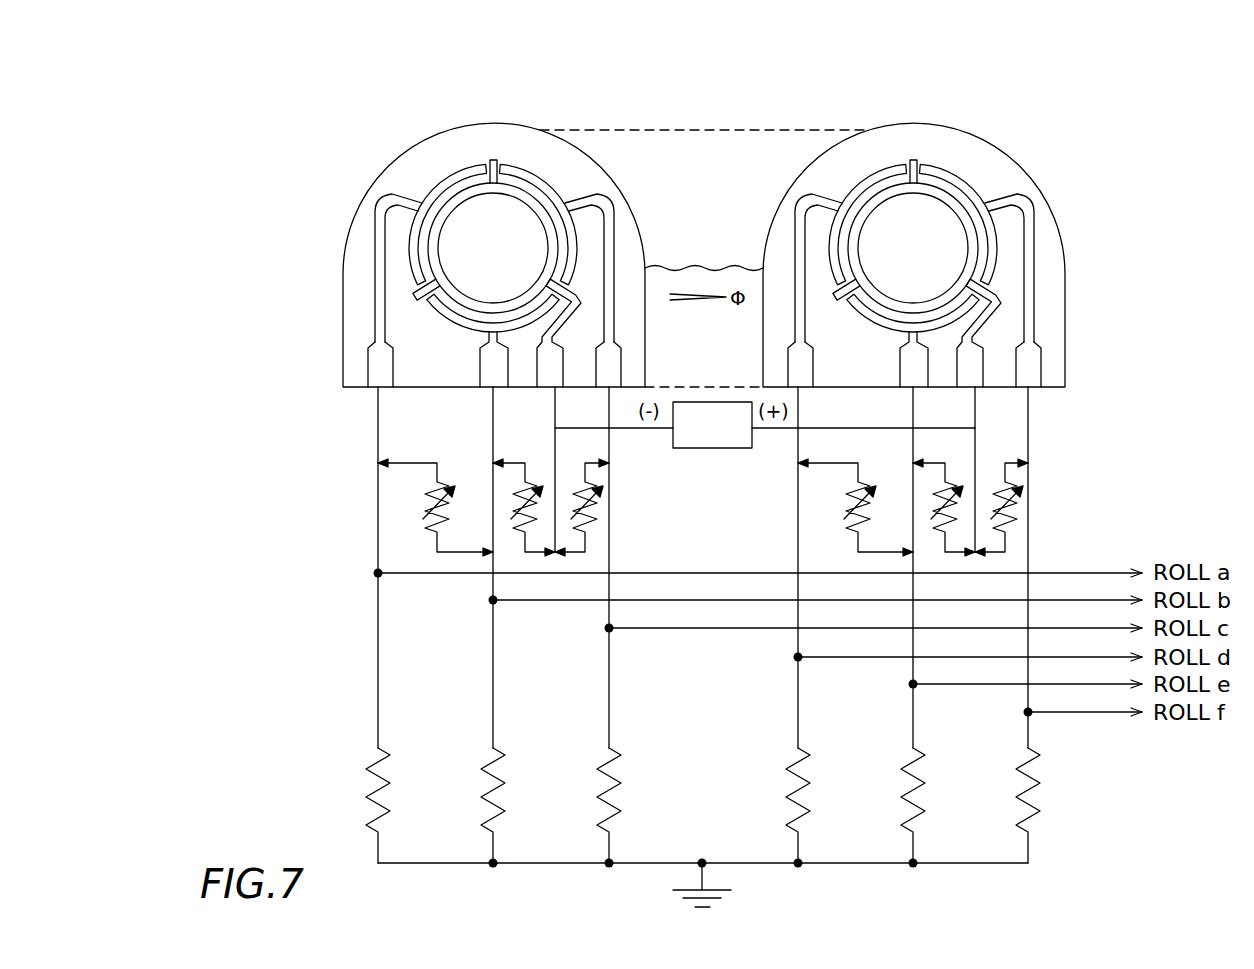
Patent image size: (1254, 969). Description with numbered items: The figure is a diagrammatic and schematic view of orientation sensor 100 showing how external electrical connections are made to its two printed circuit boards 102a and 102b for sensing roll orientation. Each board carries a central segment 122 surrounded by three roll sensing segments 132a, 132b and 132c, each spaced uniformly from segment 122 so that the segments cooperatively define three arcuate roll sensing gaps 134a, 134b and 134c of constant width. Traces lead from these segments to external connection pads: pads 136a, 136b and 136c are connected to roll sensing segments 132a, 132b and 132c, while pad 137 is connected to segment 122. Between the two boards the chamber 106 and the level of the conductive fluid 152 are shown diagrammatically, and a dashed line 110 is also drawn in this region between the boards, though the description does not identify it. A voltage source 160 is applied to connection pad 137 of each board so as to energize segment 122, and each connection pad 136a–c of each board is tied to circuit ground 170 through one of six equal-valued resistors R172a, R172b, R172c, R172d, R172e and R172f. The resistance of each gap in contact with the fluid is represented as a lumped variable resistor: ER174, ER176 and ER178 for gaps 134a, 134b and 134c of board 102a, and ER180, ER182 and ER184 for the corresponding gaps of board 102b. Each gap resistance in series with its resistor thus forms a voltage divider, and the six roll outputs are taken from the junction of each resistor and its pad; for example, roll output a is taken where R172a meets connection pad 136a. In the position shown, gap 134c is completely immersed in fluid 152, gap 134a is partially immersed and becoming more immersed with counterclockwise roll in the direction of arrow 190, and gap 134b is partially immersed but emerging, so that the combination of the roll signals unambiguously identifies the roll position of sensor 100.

The orientation sensor 100 is at (1124, 186).
The printed circuit board 102a is at (508, 111).
The printed circuit board 102b is at (923, 111).
The chamber 106 is at (770, 128).
The gap between sensor heads 110 is at (665, 142).
The segment 122 is at (512, 183).
The roll sensing segment 132a is at (432, 190).
The roll sensing segment 132b is at (600, 176).
The roll sensing segment 132c is at (416, 312).
The roll sensing gap 134a is at (432, 216).
The roll sensing gap 134b is at (556, 224).
The roll sensing gap 134c is at (500, 320).
The connection pad 136a is at (396, 368).
The connection pad 136b is at (622, 365).
The connection pad 136c is at (481, 357).
The connection pad 137 is at (565, 373).
The conductive fluid 152 is at (712, 268).
The voltage source 160 is at (732, 436).
The circuit ground 170 is at (702, 860).
The arrow 190 is at (369, 120).
The equivalent resistance ER174 is at (430, 530).
The equivalent resistance ER176 is at (518, 493).
The equivalent resistance ER178 is at (592, 522).
The equivalent resistance ER180 is at (852, 523).
The equivalent resistance ER182 is at (936, 492).
The equivalent resistance ER184 is at (1022, 488).
The resistor R172a is at (372, 790).
The resistor R172b is at (480, 768).
The resistor R172c is at (596, 766).
The resistor R172d is at (786, 783).
The resistor R172e is at (903, 787).
The resistor R172f is at (1038, 800).